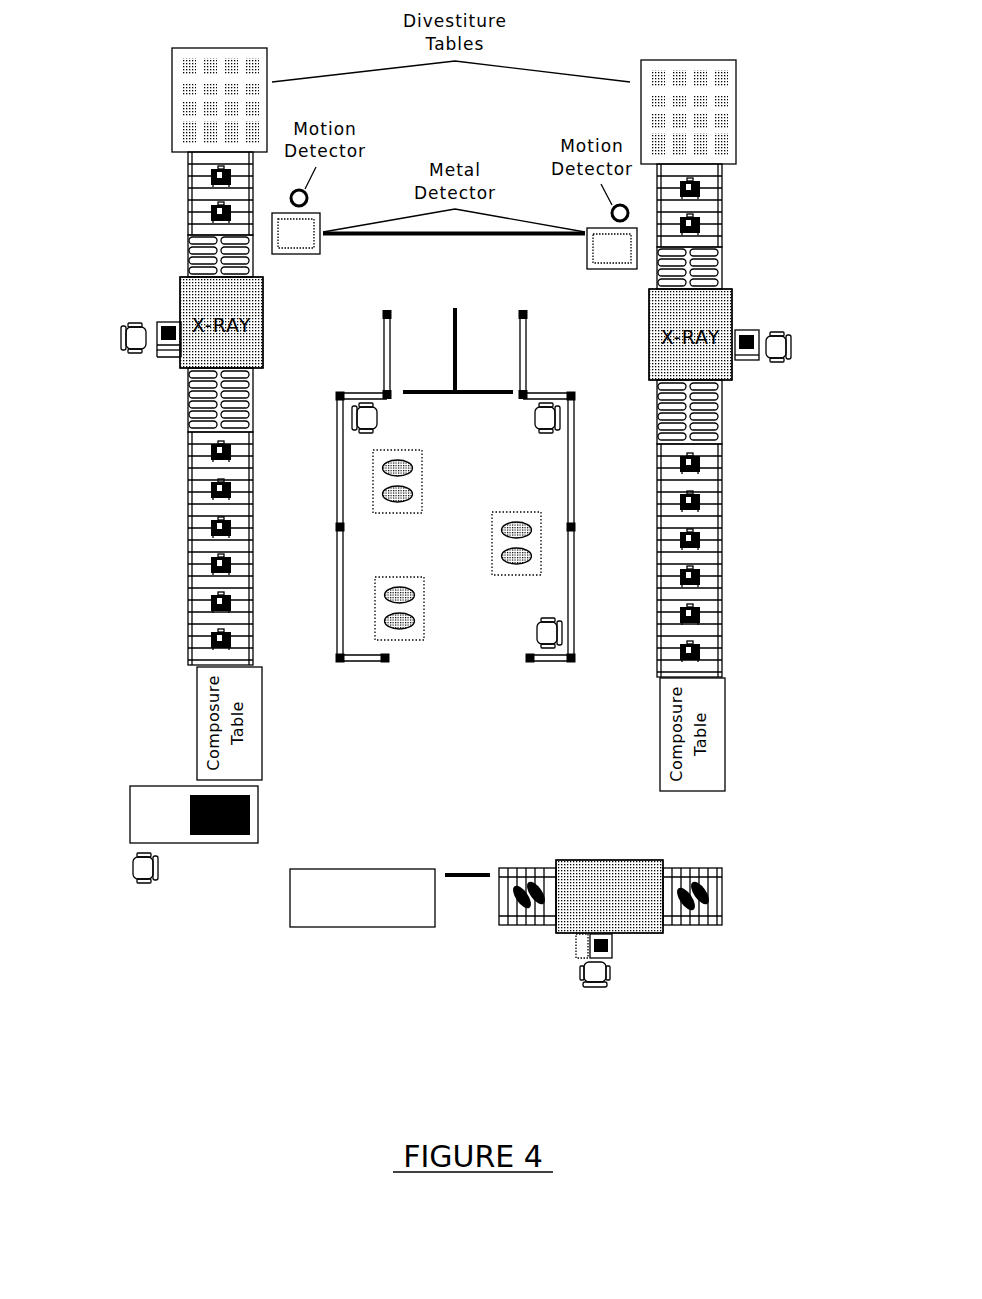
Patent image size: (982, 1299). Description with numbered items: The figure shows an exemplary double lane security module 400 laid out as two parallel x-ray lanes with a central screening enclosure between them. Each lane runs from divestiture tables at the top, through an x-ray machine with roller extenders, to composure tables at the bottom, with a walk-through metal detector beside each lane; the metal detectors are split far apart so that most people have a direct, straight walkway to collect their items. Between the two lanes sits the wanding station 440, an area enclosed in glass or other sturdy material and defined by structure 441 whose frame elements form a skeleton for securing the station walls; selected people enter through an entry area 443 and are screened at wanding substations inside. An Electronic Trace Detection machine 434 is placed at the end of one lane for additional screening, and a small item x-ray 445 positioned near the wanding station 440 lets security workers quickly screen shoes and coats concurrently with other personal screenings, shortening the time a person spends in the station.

The double lane security module 400 is at (145, 1182).
The Electronic Trace Detection machine 434 is at (128, 839).
The wanding station 440 is at (444, 513).
The structure 441 is at (344, 670).
The entry area 443 is at (431, 300).
The small item x-ray 445 is at (682, 940).